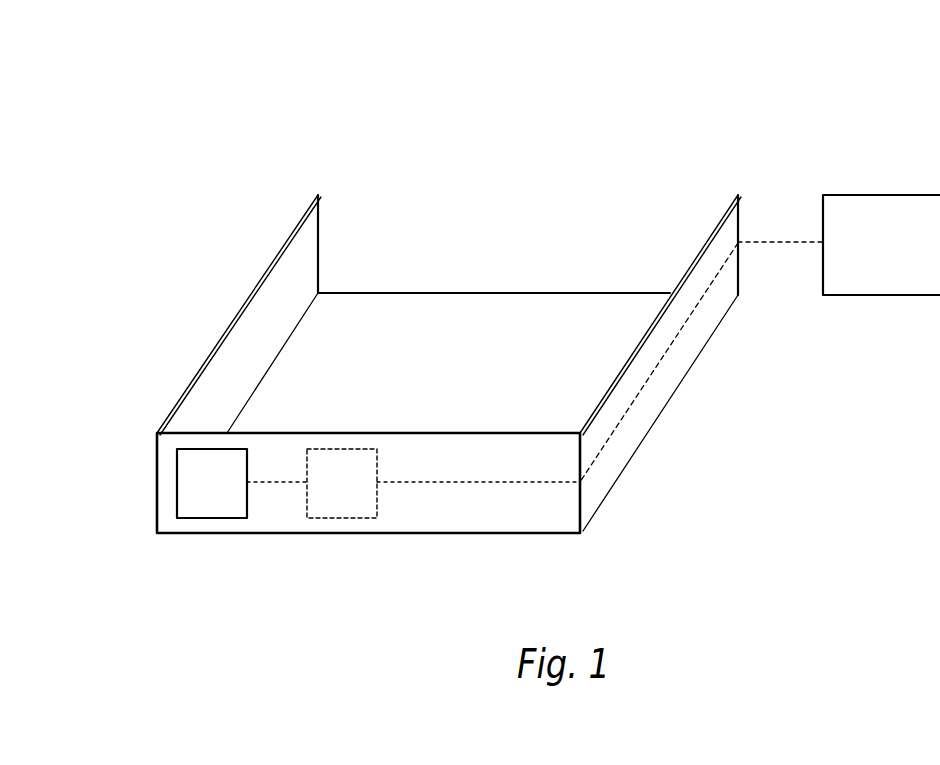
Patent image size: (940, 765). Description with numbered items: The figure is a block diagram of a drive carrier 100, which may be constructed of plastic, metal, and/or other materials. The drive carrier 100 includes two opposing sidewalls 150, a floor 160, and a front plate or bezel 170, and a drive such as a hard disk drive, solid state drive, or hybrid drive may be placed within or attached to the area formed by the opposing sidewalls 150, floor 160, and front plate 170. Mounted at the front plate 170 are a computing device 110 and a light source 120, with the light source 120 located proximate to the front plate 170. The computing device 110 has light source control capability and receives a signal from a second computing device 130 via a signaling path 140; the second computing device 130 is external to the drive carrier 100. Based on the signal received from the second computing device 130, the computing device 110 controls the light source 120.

The drive carrier 100 is at (315, 113).
The computing device 110 is at (361, 496).
The light source 120 is at (231, 496).
The second computing device 130 is at (912, 259).
The signaling path 140 is at (680, 330).
The opposing sidewalls 150 is at (246, 328).
The floor 160 is at (485, 305).
The front plate 170 is at (435, 517).